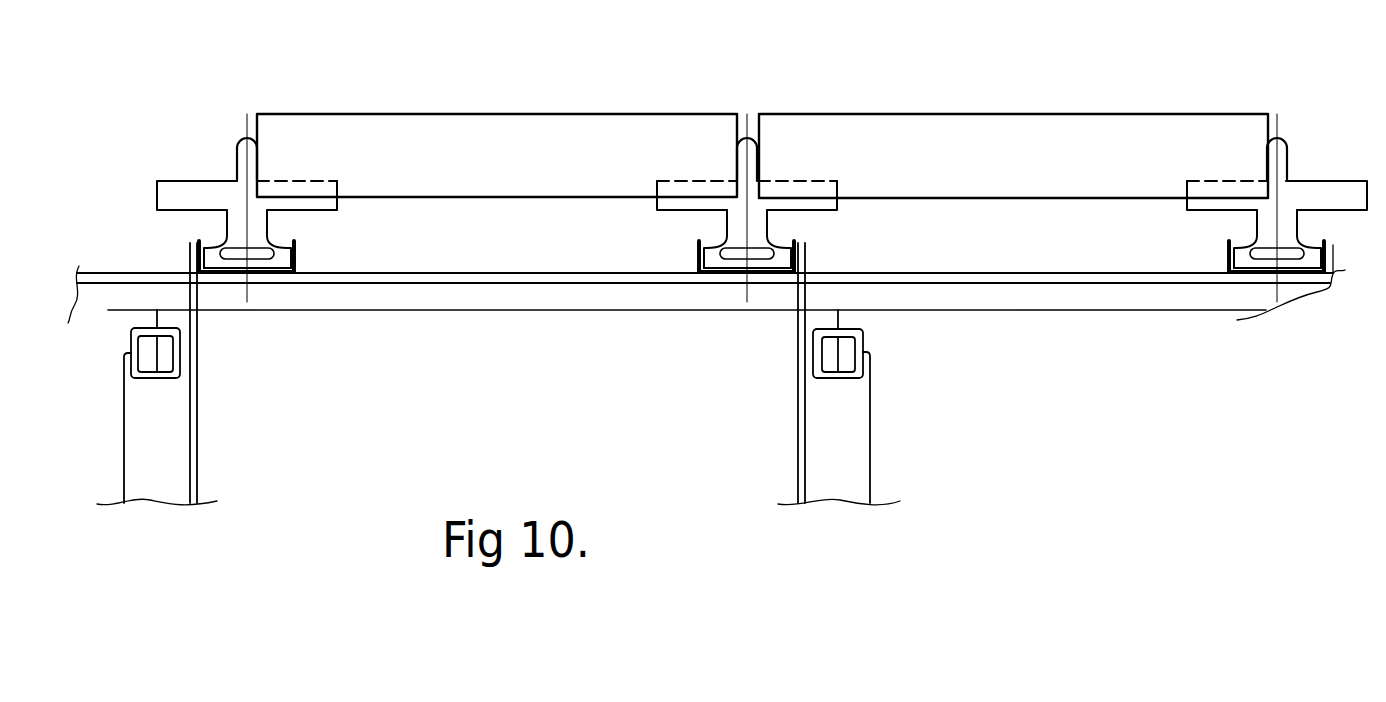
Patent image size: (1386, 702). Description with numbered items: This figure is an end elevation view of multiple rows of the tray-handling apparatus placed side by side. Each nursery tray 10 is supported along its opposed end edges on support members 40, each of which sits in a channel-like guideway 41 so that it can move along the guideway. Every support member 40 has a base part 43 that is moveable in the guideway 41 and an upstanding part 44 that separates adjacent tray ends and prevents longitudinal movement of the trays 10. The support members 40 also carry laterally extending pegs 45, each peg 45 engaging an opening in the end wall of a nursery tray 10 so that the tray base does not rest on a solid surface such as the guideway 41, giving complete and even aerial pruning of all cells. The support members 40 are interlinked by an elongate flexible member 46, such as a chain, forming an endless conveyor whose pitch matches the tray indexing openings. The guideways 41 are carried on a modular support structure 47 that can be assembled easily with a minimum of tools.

The nursery tray 10 is at (507, 140).
The support member 40 is at (253, 223).
The guideway 41 is at (293, 253).
The base part 43 is at (257, 263).
The upstanding part 44 is at (240, 148).
The peg 45 is at (178, 195).
The elongate flexible member 46 is at (233, 255).
The support structure 47 is at (157, 402).